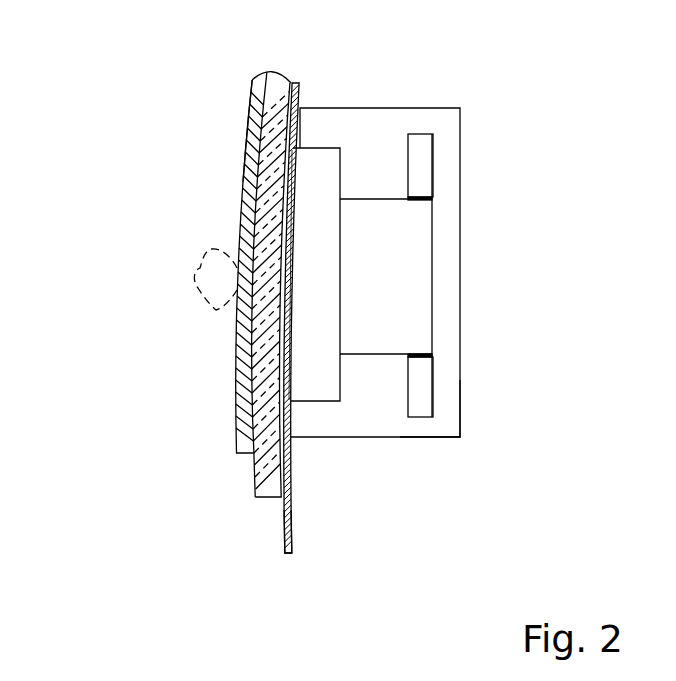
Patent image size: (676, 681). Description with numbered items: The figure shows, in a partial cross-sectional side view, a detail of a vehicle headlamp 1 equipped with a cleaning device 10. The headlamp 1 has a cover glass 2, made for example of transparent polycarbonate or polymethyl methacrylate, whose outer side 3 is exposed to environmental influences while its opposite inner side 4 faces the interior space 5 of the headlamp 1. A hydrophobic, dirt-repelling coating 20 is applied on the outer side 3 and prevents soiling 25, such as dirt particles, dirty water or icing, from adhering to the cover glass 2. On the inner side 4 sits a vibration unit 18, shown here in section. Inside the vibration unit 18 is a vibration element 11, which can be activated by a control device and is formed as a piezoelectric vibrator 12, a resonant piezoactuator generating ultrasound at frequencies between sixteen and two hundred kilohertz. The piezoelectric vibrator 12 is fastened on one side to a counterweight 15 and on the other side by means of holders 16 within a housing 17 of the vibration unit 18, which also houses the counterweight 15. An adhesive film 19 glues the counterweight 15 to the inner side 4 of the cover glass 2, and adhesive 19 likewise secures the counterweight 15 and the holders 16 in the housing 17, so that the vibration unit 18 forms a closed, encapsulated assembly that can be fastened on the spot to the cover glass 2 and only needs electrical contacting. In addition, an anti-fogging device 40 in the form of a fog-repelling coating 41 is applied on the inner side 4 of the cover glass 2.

The vehicle headlamp 1 is at (128, 185).
The cover glass 2 is at (281, 95).
The outer side 3 is at (250, 487).
The inner side 4 is at (288, 463).
The interior space 5 is at (372, 403).
The cleaning device 10 is at (222, 337).
The vibration element 11 is at (400, 276).
The piezoelectric vibrator 12 is at (383, 250).
The counterweight 15 is at (312, 289).
The holder 16 is at (420, 157).
The housing 17 is at (378, 140).
The vibration unit 18 is at (444, 412).
The adhesive film 19 is at (300, 150).
The hydrophobic, dirt-repelling coating 20 is at (258, 98).
The soiling 25 is at (220, 278).
The anti-fogging device 40 is at (290, 553).
The fog-repelling coating 41 is at (297, 520).